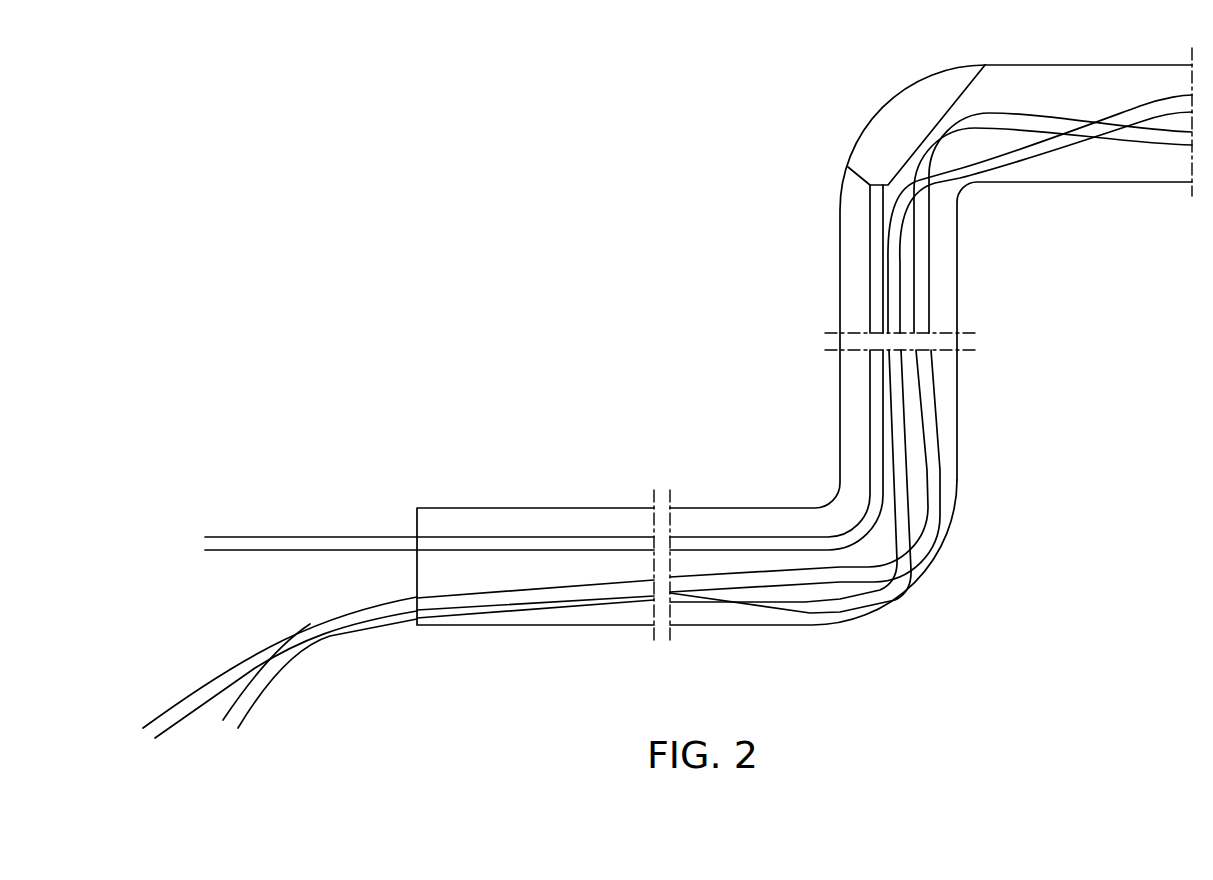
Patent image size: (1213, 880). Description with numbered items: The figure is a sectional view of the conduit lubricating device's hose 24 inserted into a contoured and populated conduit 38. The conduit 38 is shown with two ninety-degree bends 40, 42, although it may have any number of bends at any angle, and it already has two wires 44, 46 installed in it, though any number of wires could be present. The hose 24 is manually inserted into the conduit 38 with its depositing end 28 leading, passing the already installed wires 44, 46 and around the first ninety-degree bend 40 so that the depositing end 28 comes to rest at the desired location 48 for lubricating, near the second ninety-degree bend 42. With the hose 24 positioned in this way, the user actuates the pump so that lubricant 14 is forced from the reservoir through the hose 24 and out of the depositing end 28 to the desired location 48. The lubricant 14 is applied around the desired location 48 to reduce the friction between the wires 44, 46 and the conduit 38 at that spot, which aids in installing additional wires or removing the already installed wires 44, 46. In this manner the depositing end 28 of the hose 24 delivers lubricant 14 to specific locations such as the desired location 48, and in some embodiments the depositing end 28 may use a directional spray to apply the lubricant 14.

The lubricant 14 is at (937, 123).
The desired location 48 is at (897, 112).
The depositing end 28 is at (875, 210).
The second ninety-degree bend 42 is at (972, 198).
The conduit 38 is at (511, 500).
The hose 24 is at (287, 540).
The wire 44 is at (228, 672).
The wire 46 is at (253, 692).
The ninety-degree bend 40 is at (909, 602).